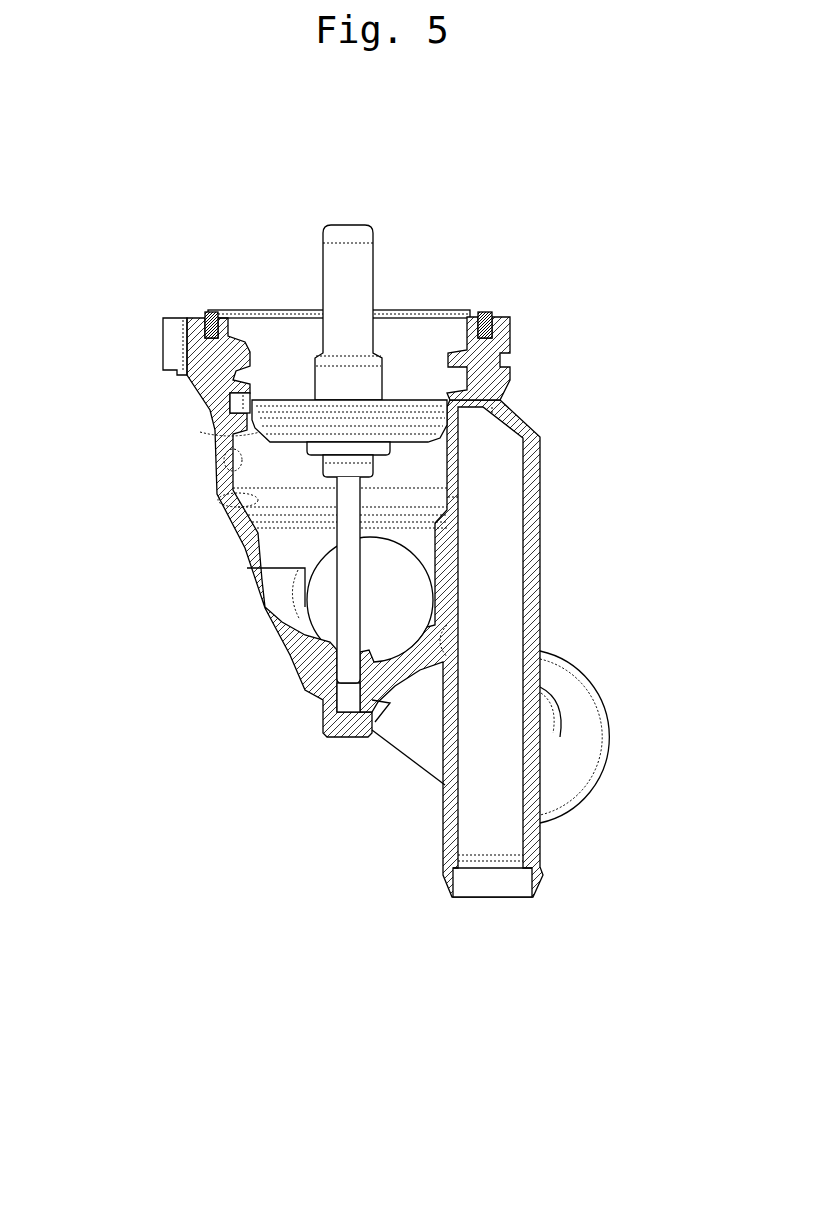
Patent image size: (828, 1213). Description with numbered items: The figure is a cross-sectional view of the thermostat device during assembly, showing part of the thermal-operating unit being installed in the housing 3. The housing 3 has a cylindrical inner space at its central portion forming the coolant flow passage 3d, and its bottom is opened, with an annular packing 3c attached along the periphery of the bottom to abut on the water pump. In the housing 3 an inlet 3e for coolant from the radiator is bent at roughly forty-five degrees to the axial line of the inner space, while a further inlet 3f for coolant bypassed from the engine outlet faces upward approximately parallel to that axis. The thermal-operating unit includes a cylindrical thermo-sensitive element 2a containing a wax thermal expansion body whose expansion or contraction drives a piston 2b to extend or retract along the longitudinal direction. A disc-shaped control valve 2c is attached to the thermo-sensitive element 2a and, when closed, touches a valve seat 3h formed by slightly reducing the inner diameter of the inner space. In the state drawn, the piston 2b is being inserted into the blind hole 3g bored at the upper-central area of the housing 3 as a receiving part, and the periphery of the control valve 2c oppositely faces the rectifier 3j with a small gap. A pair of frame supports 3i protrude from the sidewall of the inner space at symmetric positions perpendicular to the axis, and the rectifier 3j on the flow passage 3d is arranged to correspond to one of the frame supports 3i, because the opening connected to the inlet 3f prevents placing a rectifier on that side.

The thermo-sensitive element 2a is at (362, 265).
The piston 2b is at (348, 618).
The control valve 2c is at (254, 440).
The housing 3 is at (247, 568).
The annular packing 3c is at (485, 317).
The coolant flow passage 3d is at (232, 468).
The inlet 3e is at (600, 775).
The inlet 3f is at (492, 890).
The blind hole 3g is at (323, 703).
The valve seat 3h is at (240, 497).
The frame supports 3i is at (250, 355).
The rectifier 3j is at (205, 405).